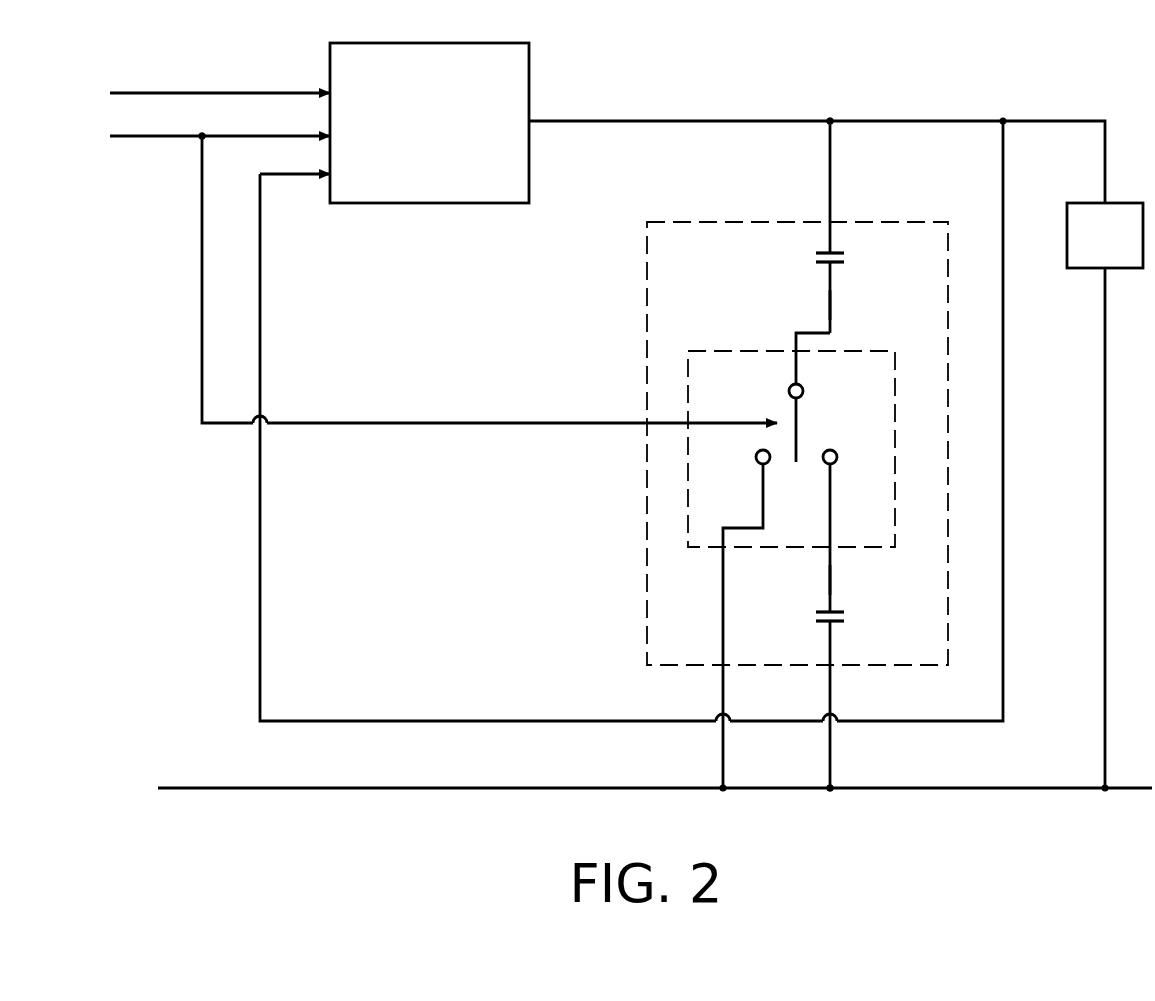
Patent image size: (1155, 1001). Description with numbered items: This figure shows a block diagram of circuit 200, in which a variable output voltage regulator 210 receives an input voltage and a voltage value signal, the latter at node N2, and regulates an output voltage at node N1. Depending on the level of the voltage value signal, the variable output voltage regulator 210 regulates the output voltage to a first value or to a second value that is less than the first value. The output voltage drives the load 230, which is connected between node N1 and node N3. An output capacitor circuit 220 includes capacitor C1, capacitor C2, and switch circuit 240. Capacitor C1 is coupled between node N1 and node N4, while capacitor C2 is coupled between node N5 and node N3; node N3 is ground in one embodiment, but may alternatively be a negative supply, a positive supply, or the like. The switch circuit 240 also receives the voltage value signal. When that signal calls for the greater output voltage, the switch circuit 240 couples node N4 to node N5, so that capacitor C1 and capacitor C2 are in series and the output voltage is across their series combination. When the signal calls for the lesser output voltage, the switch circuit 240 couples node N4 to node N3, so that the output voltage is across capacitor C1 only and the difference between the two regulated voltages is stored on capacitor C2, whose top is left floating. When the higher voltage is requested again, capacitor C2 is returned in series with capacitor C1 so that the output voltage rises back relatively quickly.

The circuit 200 is at (981, 37).
The variable output voltage regulator 210 is at (412, 181).
The output capacitor circuit 220 is at (664, 259).
The load 230 is at (1087, 264).
The switch circuit 240 is at (842, 384).
The capacitor C1 is at (847, 227).
The capacitor C2 is at (847, 697).
The node N1 is at (829, 120).
The node N2 is at (201, 139).
The node N3 is at (833, 786).
The node N4 is at (831, 305).
The node N5 is at (831, 580).